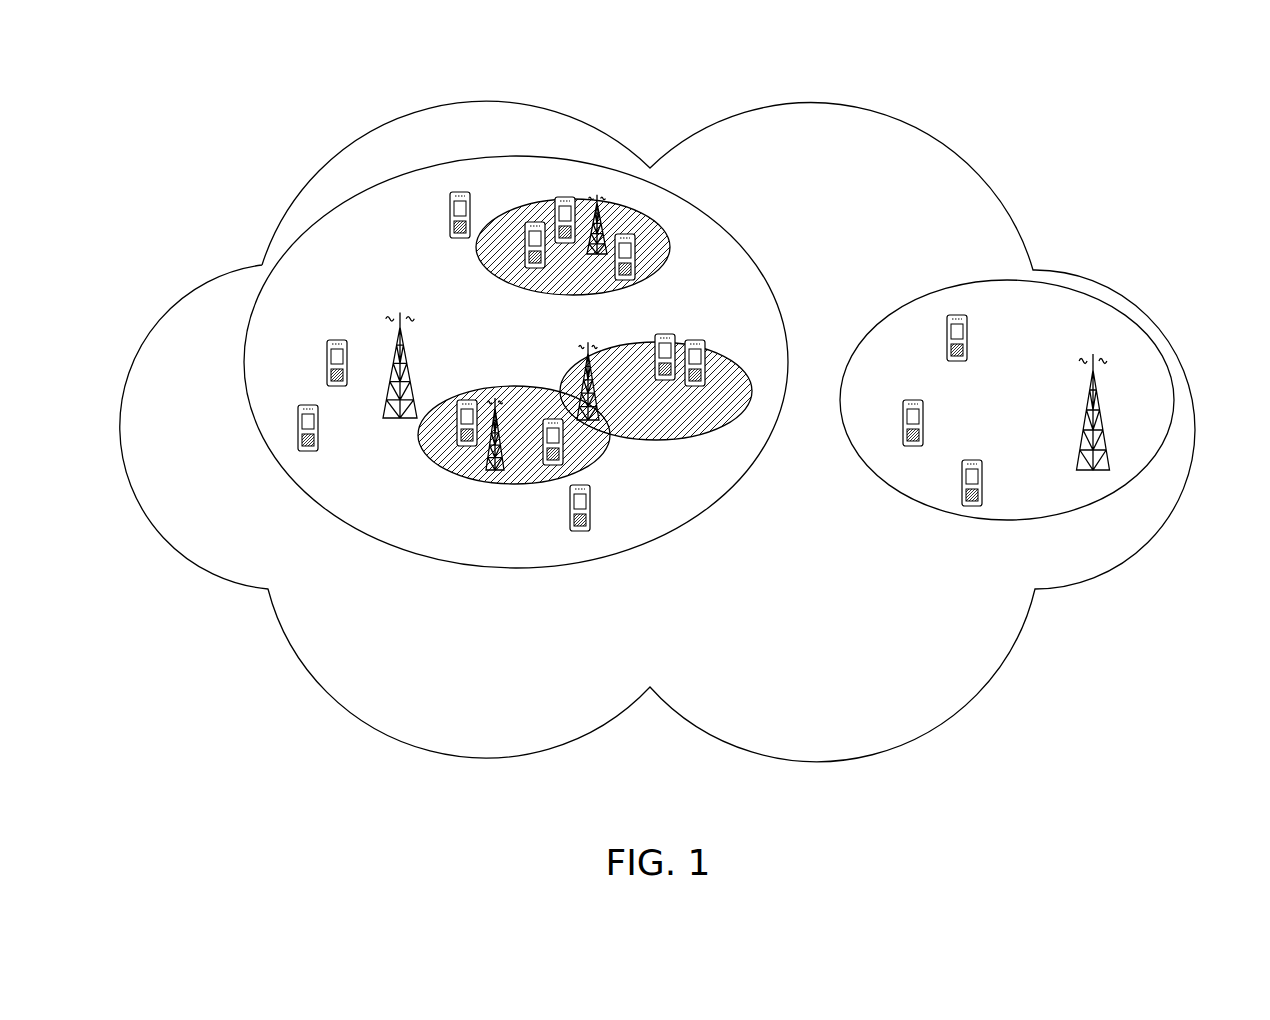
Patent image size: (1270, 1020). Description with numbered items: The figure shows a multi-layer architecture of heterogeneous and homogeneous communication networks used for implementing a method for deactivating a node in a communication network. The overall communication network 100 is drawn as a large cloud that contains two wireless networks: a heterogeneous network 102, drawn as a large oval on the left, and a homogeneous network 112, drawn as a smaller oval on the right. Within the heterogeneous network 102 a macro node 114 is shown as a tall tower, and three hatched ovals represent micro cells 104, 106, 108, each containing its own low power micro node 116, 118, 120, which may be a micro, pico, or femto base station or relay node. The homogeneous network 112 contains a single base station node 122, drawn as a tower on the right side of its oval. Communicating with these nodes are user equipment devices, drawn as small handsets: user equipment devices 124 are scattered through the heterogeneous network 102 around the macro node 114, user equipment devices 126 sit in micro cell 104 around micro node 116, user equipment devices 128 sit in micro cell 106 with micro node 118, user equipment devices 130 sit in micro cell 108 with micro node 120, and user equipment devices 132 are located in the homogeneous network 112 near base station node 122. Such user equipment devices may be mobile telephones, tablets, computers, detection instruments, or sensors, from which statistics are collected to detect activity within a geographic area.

The communication network 100 is at (291, 209).
The heterogeneous network 102 is at (357, 197).
The micro cell 104 is at (515, 203).
The micro cell 106 is at (657, 443).
The micro cell 108 is at (518, 487).
The homogeneous network 112 is at (1005, 278).
The macro node 114 is at (393, 322).
The micro node 116 is at (598, 200).
The micro node 118 is at (598, 425).
The micro node 120 is at (493, 474).
The base station node 122 is at (1104, 433).
The user equipment device 124 is at (460, 190).
The user equipment device 126 is at (536, 221).
The user equipment device 128 is at (668, 382).
The user equipment device 130 is at (462, 449).
The user equipment device 132 is at (961, 363).